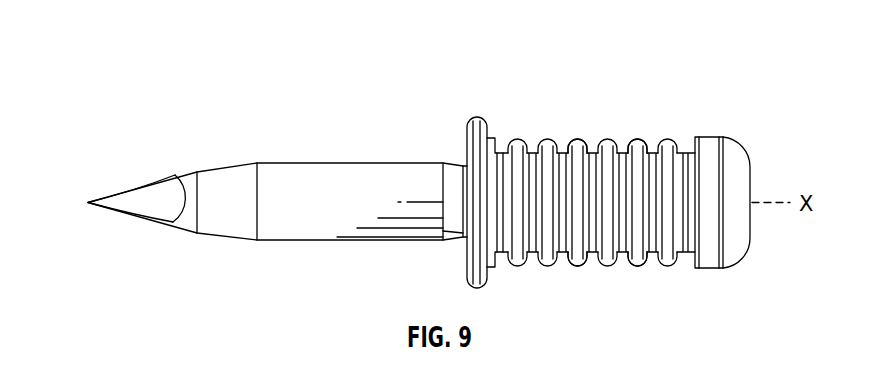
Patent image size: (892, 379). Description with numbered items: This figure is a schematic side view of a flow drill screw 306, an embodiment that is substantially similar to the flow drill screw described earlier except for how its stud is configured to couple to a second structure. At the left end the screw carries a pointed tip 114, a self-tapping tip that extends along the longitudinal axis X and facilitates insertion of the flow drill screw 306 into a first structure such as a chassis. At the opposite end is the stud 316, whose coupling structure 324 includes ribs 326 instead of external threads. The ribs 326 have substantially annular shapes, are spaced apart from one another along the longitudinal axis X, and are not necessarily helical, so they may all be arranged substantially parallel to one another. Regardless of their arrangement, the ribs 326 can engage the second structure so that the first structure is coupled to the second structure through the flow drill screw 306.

The pointed tip 114 is at (155, 193).
The flow drill screw 306 is at (421, 156).
The stud 316 is at (638, 120).
The coupling structure 324 is at (638, 265).
The ribs 326 is at (580, 265).